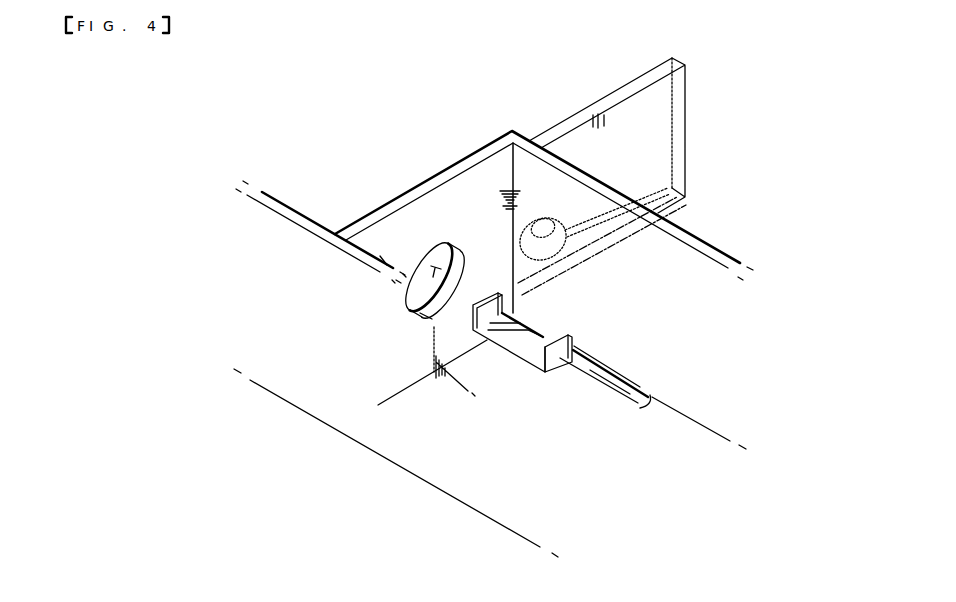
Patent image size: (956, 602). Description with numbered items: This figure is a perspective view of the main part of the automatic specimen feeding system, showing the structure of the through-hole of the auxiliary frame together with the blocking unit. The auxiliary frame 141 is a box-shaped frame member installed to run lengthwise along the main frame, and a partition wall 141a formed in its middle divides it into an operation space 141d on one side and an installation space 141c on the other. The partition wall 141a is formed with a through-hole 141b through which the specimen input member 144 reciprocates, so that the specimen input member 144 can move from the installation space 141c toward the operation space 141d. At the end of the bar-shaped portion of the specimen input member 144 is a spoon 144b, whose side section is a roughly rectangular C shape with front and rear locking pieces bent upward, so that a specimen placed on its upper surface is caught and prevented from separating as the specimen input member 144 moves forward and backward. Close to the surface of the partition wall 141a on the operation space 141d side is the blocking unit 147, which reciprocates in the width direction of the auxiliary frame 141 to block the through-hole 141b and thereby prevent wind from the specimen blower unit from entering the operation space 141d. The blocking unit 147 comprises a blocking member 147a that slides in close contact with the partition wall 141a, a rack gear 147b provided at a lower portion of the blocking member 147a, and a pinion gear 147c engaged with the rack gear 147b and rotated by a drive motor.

The auxiliary frame 141 is at (358, 241).
The partition wall 141a is at (425, 184).
The through-hole 141b is at (455, 273).
The installation space 141c is at (324, 177).
The operation space 141d is at (672, 302).
The specimen input member 144 is at (607, 383).
The spoon 144b is at (513, 353).
The blocking unit 147 is at (650, 175).
The blocking member 147a is at (686, 125).
The rack gear 147b is at (660, 186).
The pinion gear 147c is at (555, 227).